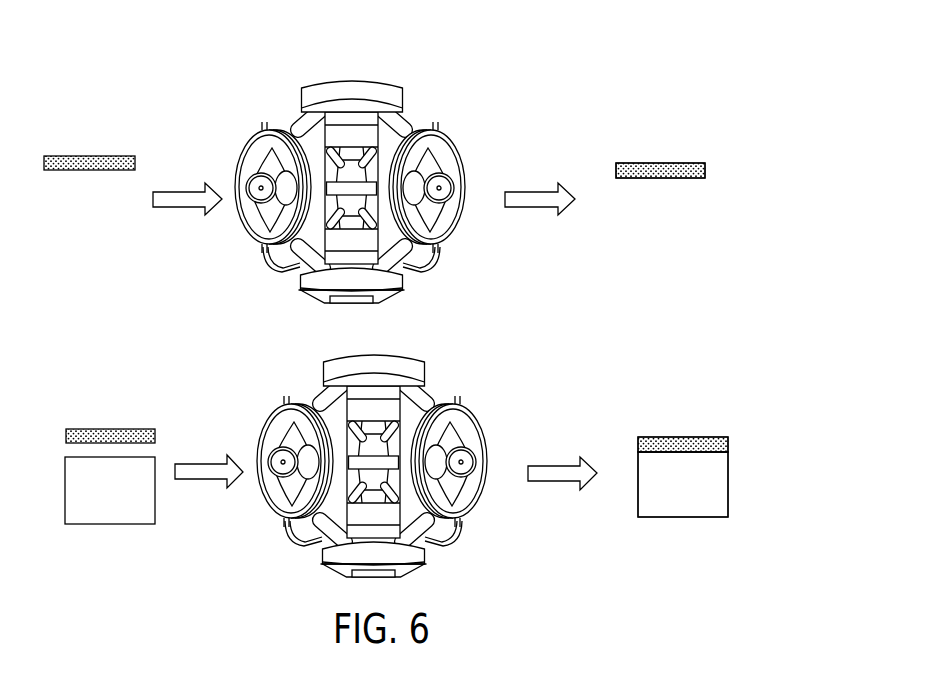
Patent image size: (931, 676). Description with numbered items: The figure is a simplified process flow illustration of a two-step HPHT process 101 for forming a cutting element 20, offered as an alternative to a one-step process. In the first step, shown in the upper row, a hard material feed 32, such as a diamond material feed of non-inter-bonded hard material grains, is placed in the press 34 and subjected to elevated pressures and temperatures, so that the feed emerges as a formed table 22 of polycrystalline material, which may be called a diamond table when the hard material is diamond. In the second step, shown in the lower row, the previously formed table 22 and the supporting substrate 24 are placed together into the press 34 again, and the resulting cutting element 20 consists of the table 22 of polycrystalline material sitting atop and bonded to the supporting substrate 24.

The cutting element 20 is at (733, 398).
The table of polycrystalline material 22 is at (637, 163).
The supporting substrate 24 is at (87, 516).
The hard material feed 32 is at (53, 161).
The press 34 is at (418, 78).
The two-step HPHT process 101 is at (635, 66).